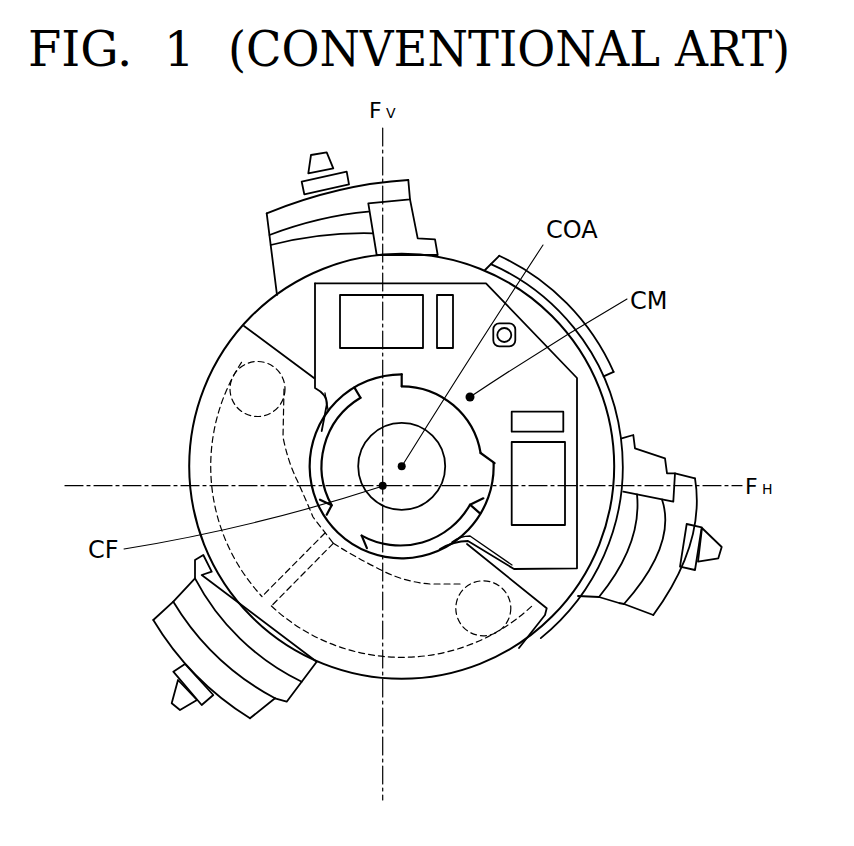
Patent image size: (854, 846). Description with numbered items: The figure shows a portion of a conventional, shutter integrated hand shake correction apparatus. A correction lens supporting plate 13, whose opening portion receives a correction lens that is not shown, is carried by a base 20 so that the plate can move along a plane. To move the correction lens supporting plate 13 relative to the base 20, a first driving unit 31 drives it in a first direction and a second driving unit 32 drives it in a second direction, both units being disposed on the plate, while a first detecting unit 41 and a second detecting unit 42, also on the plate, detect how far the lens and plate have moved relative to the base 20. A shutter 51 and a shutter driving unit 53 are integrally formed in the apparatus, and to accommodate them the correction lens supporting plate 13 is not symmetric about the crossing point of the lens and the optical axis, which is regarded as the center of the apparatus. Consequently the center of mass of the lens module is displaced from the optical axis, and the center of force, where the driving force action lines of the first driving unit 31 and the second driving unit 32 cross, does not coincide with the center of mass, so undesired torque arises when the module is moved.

The correction lens supporting plate 13 is at (327, 292).
The base 20 is at (603, 456).
The first driving unit 31 is at (348, 323).
The second driving unit 32 is at (545, 478).
The first detecting unit 41 is at (447, 305).
The second detecting unit 42 is at (558, 422).
The shutter 51 is at (228, 432).
The shutter driving unit 53 is at (250, 385).